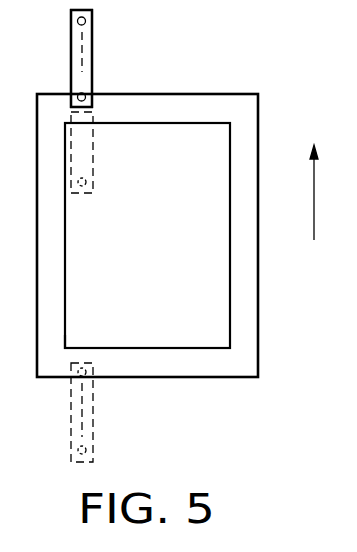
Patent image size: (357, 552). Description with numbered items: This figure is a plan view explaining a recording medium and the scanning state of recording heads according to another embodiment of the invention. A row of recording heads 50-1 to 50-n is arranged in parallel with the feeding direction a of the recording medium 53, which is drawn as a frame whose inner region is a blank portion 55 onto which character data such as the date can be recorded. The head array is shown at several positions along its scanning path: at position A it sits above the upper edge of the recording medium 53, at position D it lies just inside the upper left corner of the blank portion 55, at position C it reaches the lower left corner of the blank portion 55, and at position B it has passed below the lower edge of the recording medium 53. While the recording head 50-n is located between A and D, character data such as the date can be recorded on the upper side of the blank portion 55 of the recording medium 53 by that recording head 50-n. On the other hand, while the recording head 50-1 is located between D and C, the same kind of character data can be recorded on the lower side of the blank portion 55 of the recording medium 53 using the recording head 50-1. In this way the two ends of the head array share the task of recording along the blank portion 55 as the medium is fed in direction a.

The recording head 50-n is at (89, 18).
The recording head 50-1 is at (87, 72).
The recording medium 53 is at (187, 93).
The blank portion 55 is at (223, 108).
The position A is at (98, 91).
The position B is at (95, 381).
The position C is at (99, 354).
The position D is at (99, 127).
The feeding direction a is at (315, 210).